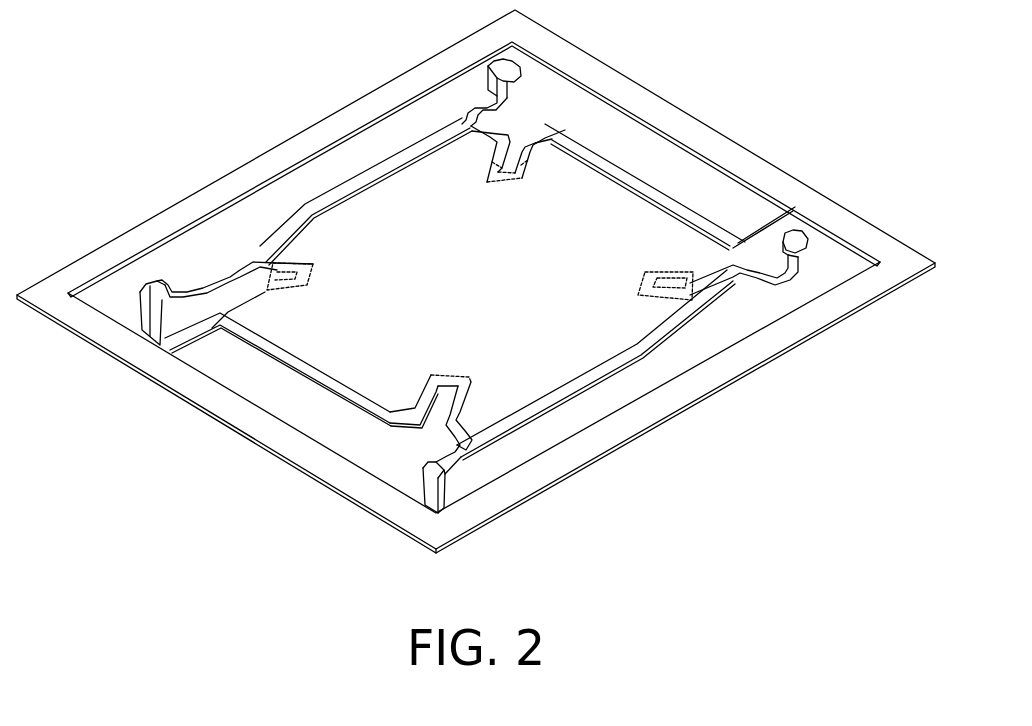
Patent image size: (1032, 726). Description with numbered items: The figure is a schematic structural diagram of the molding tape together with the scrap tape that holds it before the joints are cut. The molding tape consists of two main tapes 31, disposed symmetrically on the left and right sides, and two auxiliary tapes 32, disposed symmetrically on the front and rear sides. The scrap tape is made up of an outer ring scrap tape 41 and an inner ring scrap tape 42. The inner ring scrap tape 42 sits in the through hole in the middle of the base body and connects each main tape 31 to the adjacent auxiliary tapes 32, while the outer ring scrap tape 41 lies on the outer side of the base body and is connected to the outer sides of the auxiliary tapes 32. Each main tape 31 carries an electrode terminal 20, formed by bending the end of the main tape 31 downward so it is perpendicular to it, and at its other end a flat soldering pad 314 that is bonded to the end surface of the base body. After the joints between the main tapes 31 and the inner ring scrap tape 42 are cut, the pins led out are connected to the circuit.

The outer ring scrap tape 41 is at (781, 169).
The soldering pad 314 is at (521, 70).
The inner ring scrap tape 42 is at (650, 298).
The main tape 31 is at (540, 402).
The auxiliary tape 32 is at (318, 373).
The electrode terminal 20 is at (428, 487).